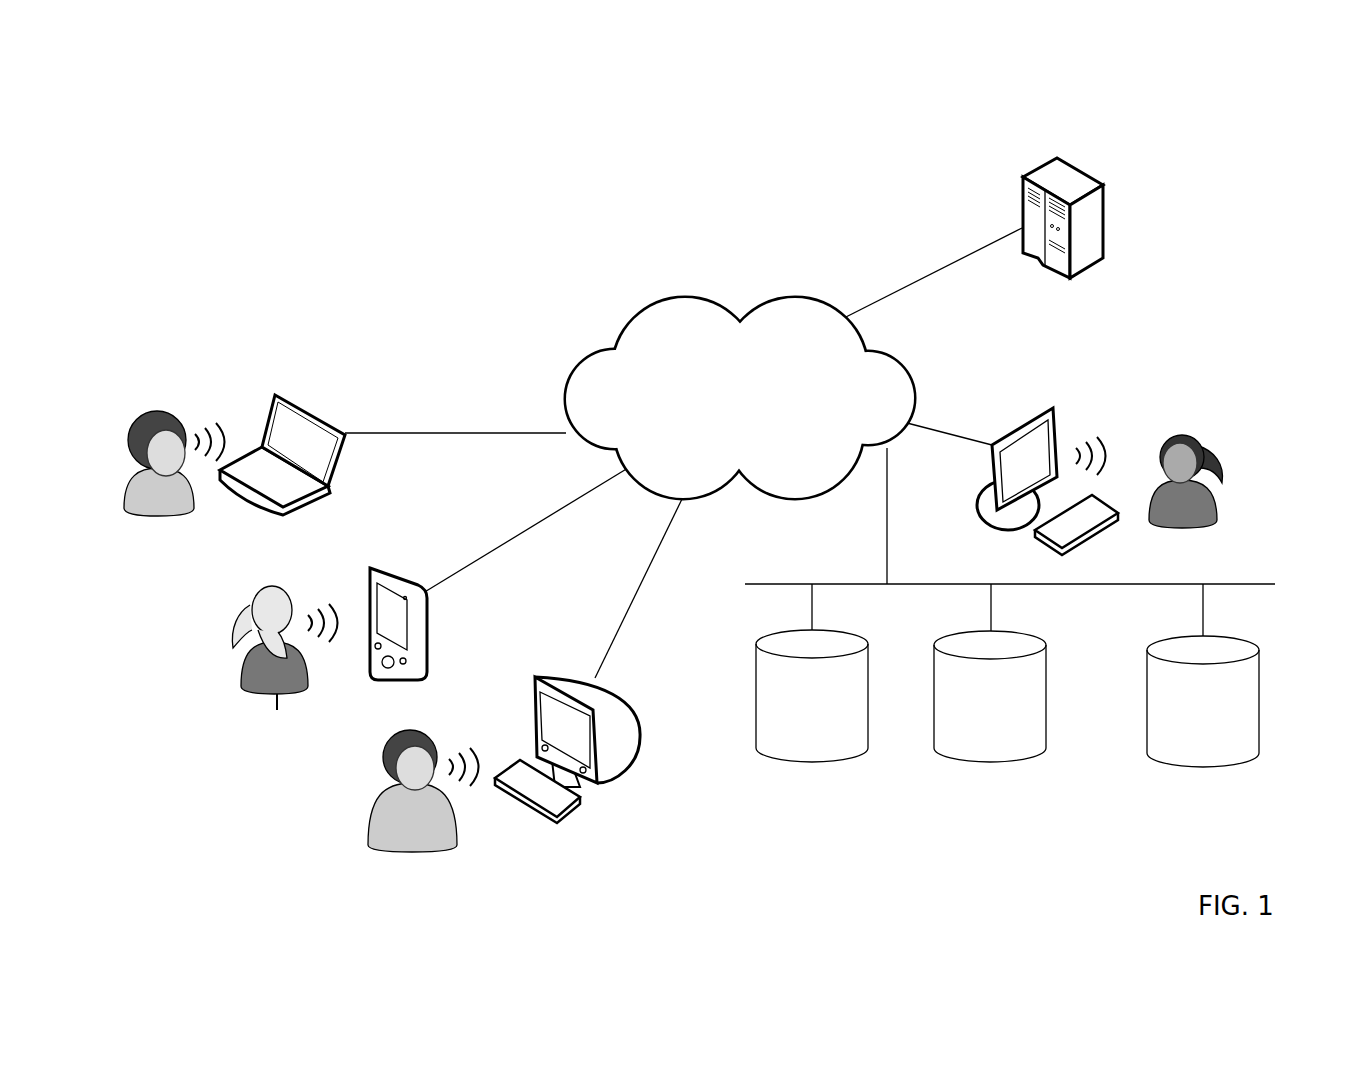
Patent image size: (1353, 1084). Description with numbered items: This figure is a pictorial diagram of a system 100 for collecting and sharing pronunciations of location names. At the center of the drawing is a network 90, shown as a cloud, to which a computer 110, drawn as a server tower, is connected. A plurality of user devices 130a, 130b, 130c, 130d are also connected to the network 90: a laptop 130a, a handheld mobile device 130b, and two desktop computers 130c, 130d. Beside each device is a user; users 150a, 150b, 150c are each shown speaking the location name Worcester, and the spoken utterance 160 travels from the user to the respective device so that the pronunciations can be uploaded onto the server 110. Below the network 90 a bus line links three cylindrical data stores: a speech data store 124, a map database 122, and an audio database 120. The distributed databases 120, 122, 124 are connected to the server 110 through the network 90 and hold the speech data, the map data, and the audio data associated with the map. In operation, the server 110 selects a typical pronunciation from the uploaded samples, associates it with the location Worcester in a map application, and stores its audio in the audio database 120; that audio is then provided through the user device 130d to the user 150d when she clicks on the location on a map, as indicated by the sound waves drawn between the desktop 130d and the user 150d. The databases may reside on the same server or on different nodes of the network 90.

The system 100 is at (640, 96).
The network 90 is at (563, 393).
The computer 110 is at (1095, 175).
The spoken utterance 160 is at (217, 380).
The user 150a is at (133, 468).
The user device 130a is at (338, 472).
The user 150b is at (238, 667).
The user device 130b is at (423, 617).
The user 150c is at (383, 782).
The user device 130c is at (617, 740).
The user device 130d is at (1018, 418).
The user 150d is at (1230, 440).
The distributed database 124 is at (753, 672).
The database 122 is at (1048, 658).
The audio database 120 is at (1260, 672).